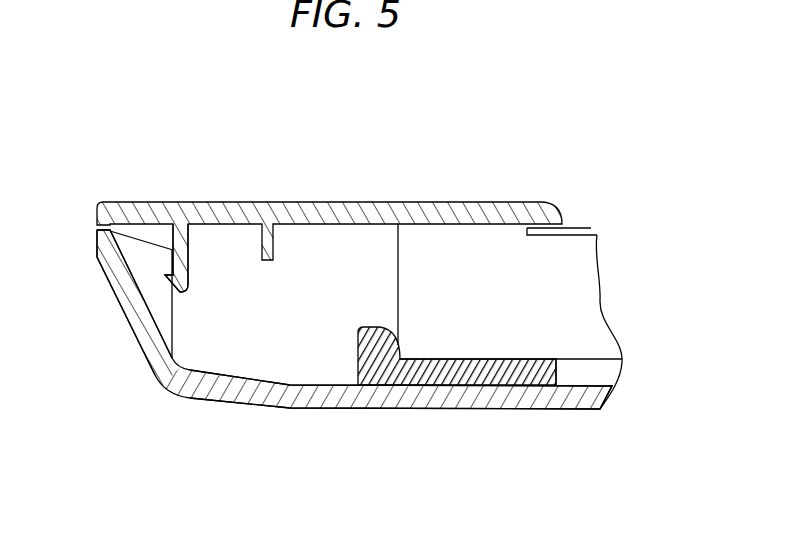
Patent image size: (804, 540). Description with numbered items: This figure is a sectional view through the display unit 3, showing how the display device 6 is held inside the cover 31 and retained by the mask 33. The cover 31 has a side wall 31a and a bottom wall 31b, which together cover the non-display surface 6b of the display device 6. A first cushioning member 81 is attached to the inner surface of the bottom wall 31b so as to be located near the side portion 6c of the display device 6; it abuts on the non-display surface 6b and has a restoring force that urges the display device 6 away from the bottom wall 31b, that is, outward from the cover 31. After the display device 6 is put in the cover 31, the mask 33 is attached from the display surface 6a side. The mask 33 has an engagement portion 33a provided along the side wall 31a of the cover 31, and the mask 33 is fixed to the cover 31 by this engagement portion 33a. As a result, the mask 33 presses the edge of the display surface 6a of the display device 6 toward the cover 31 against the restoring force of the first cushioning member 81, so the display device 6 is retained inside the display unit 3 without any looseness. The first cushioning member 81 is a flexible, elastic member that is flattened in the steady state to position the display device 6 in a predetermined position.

The display unit 3 is at (178, 186).
The mask 33 is at (405, 208).
The engagement portion 33a is at (176, 292).
The cover 31 is at (300, 415).
The side wall 31a is at (112, 292).
The bottom wall 31b is at (351, 398).
The display device 6 is at (583, 290).
The display surface 6a is at (587, 227).
The non-display surface 6b is at (585, 360).
The side portion 6c is at (427, 262).
The first cushioning member 81 is at (370, 347).